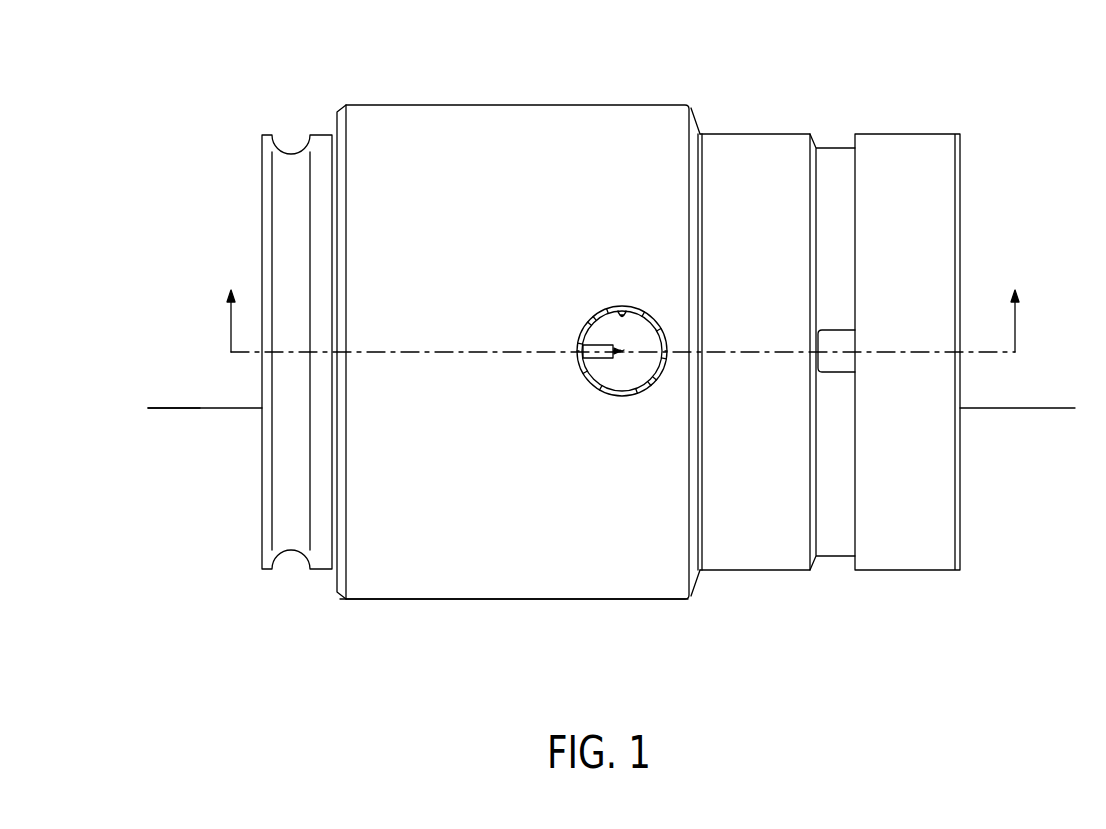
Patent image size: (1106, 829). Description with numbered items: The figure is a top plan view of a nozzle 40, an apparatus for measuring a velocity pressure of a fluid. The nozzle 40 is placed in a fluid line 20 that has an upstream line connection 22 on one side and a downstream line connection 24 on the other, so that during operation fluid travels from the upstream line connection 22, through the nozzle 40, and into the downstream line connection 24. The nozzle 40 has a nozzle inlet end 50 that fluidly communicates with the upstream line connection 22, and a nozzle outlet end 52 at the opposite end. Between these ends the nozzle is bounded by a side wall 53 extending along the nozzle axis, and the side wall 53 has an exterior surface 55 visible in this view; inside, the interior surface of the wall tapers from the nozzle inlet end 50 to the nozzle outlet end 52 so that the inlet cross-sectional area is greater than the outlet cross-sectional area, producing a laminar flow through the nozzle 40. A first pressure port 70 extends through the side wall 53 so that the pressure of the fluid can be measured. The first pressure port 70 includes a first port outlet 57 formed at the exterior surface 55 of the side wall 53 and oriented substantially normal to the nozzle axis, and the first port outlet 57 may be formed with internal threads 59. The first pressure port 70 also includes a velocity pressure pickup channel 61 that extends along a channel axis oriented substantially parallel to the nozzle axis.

The nozzle 40 is at (808, 94).
The fluid line 20 is at (206, 409).
The upstream line connection 22 is at (174, 405).
The downstream line connection 24 is at (1018, 410).
The nozzle inlet end 50 is at (262, 196).
The nozzle outlet end 52 is at (960, 196).
The side wall 53 is at (625, 577).
The exterior surface 55 is at (456, 600).
The first port outlet 57 is at (626, 315).
The internal threads 59 is at (600, 316).
The velocity pressure pickup channel 61 is at (590, 358).
The first pressure port 70 is at (622, 372).